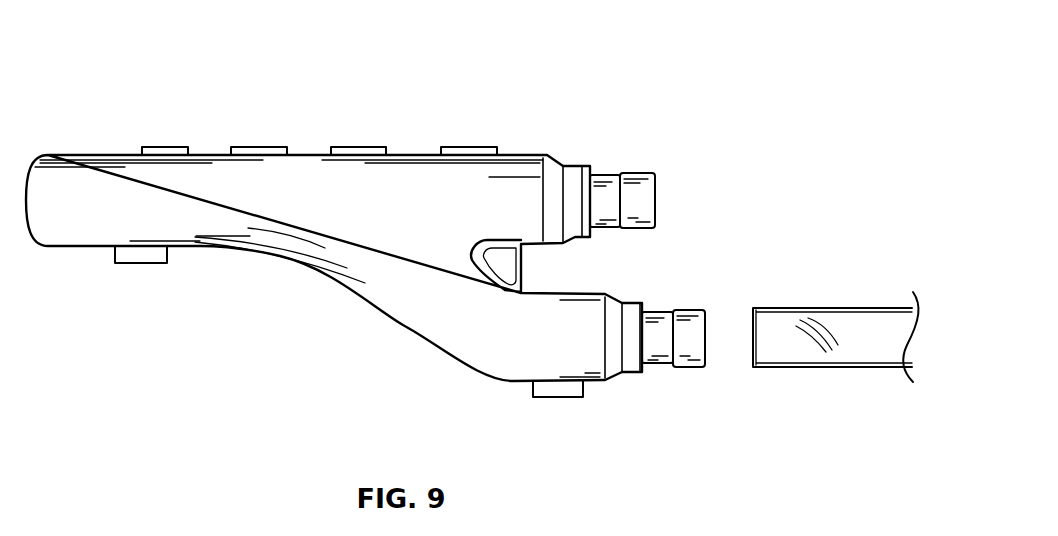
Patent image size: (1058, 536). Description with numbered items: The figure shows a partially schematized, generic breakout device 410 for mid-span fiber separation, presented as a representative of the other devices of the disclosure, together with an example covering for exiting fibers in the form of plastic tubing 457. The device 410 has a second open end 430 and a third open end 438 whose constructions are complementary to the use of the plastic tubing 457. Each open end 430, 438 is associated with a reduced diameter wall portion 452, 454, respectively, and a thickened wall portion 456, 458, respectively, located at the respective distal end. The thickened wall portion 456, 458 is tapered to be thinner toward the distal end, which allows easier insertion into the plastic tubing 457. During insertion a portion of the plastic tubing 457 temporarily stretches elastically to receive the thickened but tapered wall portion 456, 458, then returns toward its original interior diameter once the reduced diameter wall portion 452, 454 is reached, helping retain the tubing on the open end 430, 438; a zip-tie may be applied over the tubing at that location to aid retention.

The device 410 is at (143, 44).
The second open end 430 is at (662, 139).
The third open end 438 is at (675, 394).
The reduced diameter wall portion 452 is at (603, 183).
The reduced diameter wall portion 454 is at (655, 348).
The thickened wall portion 456 is at (636, 185).
The plastic tubing 457 is at (860, 355).
The thickened wall portion 458 is at (692, 348).